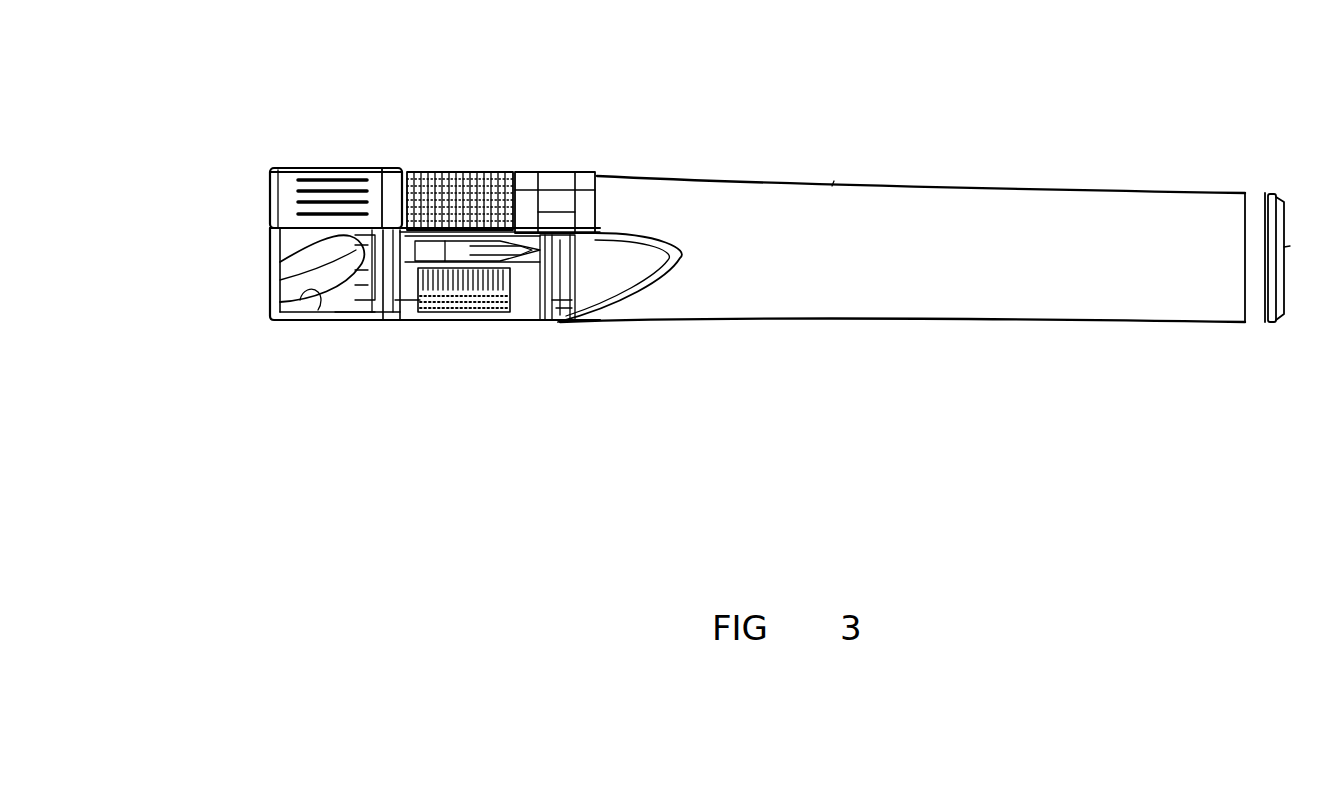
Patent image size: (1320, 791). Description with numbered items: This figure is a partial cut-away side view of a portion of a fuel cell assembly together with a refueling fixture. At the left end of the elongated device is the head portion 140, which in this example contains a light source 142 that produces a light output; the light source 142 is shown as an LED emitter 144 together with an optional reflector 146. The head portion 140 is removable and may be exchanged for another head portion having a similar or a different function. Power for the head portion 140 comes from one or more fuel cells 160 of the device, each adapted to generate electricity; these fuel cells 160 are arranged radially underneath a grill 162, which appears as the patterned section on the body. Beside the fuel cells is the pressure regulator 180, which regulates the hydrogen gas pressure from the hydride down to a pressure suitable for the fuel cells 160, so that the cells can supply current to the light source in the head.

The head portion 140 is at (313, 174).
The light source 142 is at (350, 242).
The LED emitter 144 is at (360, 263).
The reflector 146 is at (342, 297).
The fuel cells 160 is at (425, 315).
The grill 162 is at (465, 178).
The pressure regulator 180 is at (552, 322).